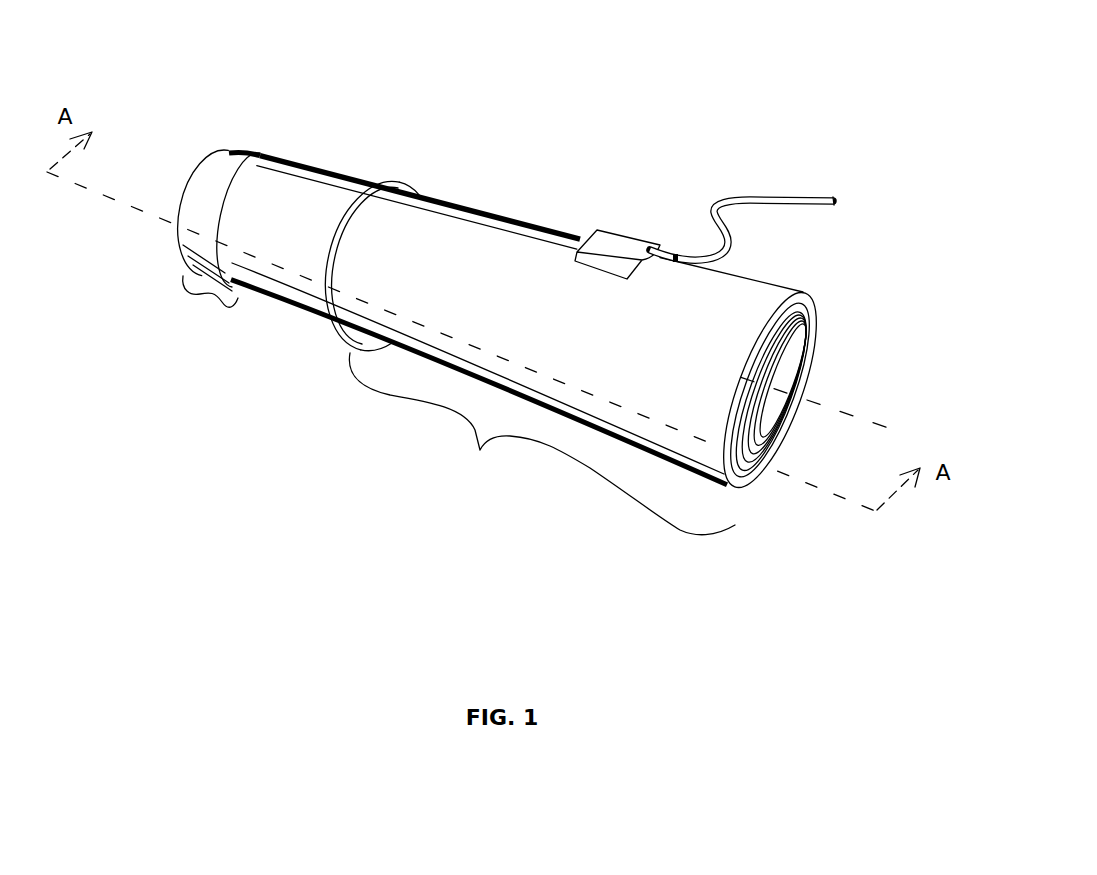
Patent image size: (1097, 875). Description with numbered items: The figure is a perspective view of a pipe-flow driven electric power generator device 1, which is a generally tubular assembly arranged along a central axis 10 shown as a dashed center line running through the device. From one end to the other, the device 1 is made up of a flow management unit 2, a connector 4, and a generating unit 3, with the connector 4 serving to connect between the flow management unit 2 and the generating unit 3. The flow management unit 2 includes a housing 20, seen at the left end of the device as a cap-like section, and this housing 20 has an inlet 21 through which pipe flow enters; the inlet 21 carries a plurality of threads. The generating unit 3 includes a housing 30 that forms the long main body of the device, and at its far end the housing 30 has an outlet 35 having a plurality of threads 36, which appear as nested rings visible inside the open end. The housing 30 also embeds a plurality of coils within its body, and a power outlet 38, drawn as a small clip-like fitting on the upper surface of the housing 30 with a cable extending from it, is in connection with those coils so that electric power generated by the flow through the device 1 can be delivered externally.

The pipe-flow driven electric power generator device 1 is at (465, 135).
The flow management unit 2 is at (208, 301).
The generating unit 3 is at (542, 444).
The connector 4 is at (267, 275).
The central axis 10 is at (850, 415).
The housing 20 is at (217, 163).
The inlet 21 is at (178, 215).
The housing 30 is at (750, 290).
The outlet 35 is at (807, 308).
The threads 36 is at (772, 398).
The power outlet 38 is at (632, 245).